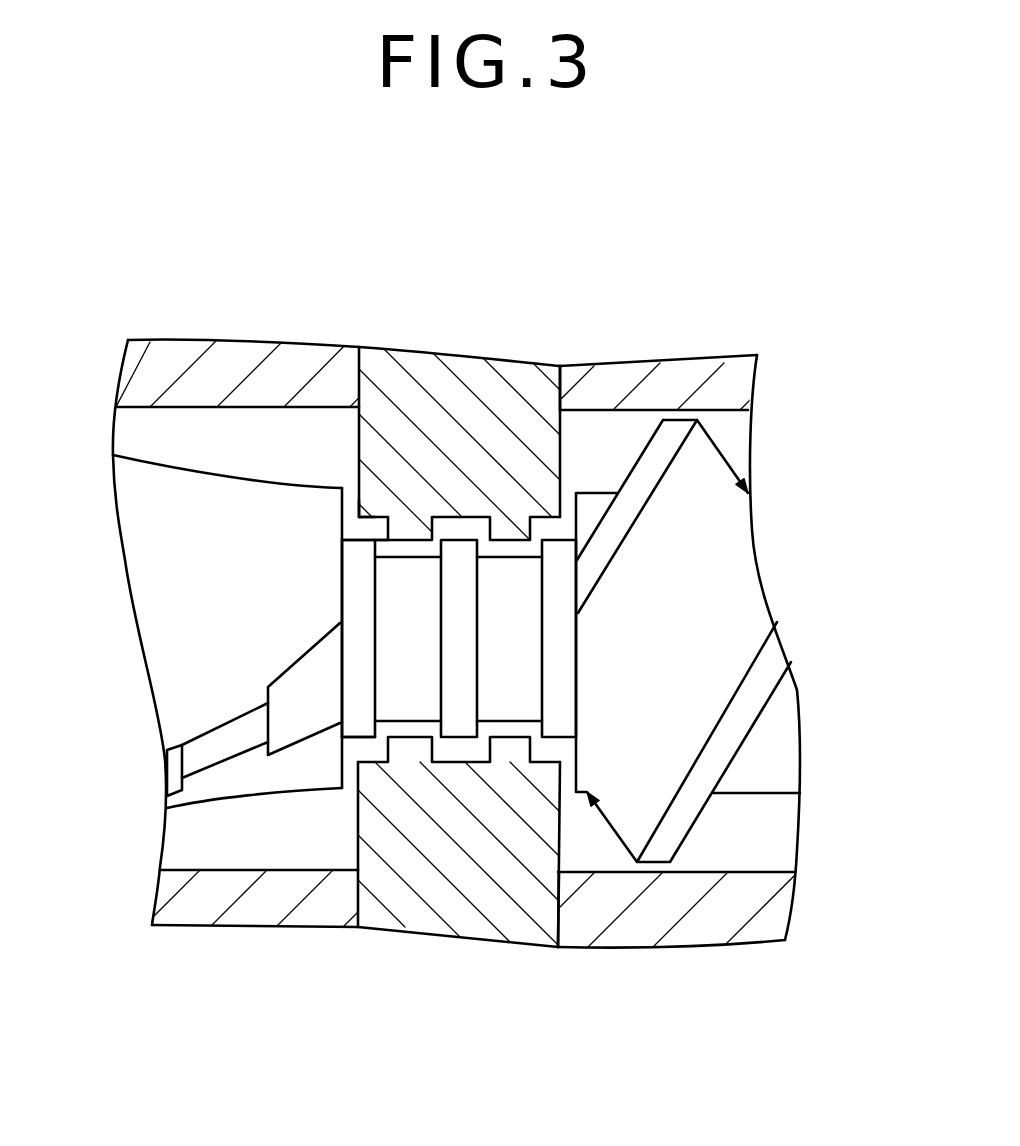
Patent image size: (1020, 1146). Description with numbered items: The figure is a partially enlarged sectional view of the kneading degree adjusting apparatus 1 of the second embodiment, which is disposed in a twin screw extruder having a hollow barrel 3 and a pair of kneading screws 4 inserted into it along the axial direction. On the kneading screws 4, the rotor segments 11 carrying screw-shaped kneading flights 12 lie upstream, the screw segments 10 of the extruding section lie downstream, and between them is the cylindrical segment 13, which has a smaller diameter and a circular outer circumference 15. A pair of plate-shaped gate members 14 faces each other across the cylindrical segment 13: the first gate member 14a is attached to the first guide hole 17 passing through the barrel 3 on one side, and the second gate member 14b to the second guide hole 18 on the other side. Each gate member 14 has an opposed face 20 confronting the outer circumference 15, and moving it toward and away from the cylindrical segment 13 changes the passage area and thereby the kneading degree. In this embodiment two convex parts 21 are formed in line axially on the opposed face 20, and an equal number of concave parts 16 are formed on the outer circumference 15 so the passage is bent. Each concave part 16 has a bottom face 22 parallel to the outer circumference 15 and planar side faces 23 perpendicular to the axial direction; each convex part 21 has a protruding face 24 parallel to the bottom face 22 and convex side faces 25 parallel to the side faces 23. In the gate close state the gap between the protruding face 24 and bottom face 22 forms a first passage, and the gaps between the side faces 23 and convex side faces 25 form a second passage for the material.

The kneading degree adjusting apparatus 1 is at (566, 267).
The hollow barrel 3 is at (719, 378).
The kneading screws 4 is at (747, 773).
The screw segments 10 is at (707, 527).
The rotor segments 11 is at (152, 491).
The kneading flights 12 is at (172, 762).
The cylindrical segment 13 is at (355, 743).
The gate member 14 is at (369, 307).
The first gate member 14a is at (468, 395).
The second gate member 14b is at (495, 905).
The outer circumference 15 is at (450, 517).
The concave part 16 is at (397, 727).
The first guide hole 17 is at (560, 399).
The second guide hole 18 is at (558, 903).
The opposed face 20 is at (362, 523).
The convex part 21 is at (383, 547).
The bottom face 22 is at (527, 723).
The side faces 23 is at (430, 730).
The protruding face 24 is at (407, 540).
The convex side faces 25 is at (387, 532).